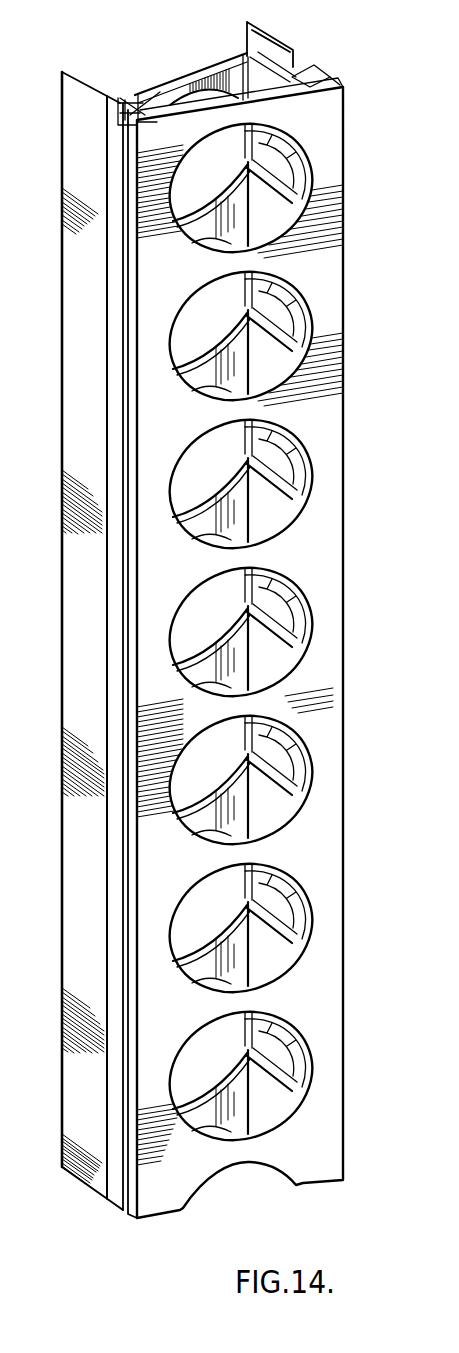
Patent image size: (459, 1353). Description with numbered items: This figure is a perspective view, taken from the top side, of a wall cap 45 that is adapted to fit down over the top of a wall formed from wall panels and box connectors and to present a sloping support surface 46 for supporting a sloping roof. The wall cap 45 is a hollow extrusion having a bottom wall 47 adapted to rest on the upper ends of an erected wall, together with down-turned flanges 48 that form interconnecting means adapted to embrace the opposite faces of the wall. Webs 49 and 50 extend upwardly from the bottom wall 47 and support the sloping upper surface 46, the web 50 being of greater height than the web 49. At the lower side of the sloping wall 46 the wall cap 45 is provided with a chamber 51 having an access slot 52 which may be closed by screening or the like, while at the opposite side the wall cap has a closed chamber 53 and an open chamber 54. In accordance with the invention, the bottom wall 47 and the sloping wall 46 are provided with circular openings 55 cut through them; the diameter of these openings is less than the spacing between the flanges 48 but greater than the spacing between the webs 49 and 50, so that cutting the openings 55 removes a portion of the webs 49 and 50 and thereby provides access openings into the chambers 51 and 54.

The wall cap 45 is at (47, 107).
The sloping support surface 46 is at (318, 688).
The bottom wall 47 is at (190, 74).
The down-turned flanges 48 is at (62, 320).
The web 49 is at (125, 115).
The web 50 is at (250, 76).
The chamber 51 is at (133, 100).
The access slot 52 is at (125, 208).
The closed chamber 53 is at (333, 70).
The open chamber 54 is at (300, 72).
The circular openings 55 is at (275, 608).